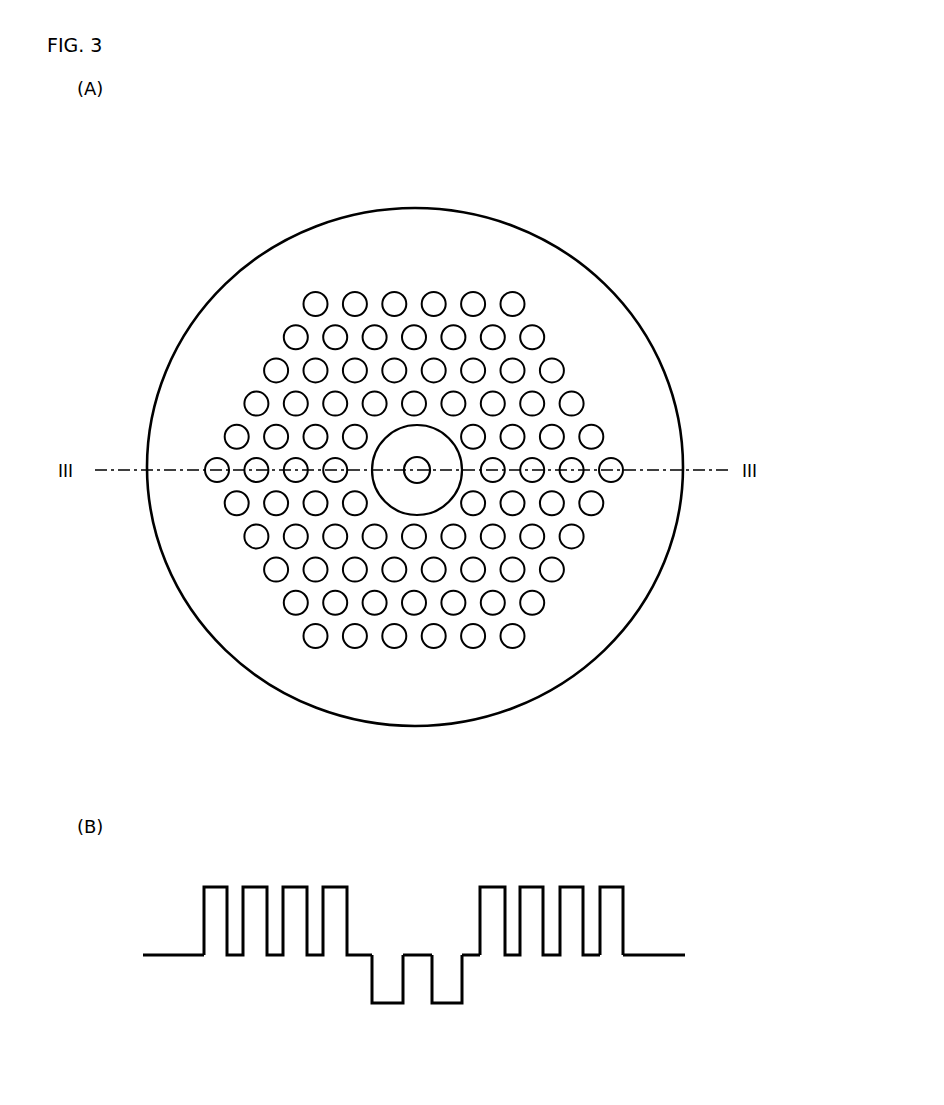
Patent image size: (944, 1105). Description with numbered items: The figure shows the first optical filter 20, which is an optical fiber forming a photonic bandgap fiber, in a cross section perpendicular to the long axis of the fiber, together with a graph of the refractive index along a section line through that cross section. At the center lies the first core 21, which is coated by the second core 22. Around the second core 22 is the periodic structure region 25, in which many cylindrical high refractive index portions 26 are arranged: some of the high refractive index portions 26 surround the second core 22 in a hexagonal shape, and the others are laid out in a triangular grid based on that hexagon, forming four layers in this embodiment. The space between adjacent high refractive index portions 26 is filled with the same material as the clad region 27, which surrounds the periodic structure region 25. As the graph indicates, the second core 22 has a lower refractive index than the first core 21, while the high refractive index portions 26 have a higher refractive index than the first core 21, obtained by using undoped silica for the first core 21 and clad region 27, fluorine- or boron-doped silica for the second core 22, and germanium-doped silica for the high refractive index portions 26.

The first optical filter 20 is at (508, 543).
The first core 21 is at (418, 467).
The second core 22 is at (430, 498).
The periodic structure region 25 is at (543, 305).
The high refractive index portions 26 is at (593, 435).
The clad region 27 is at (635, 555).